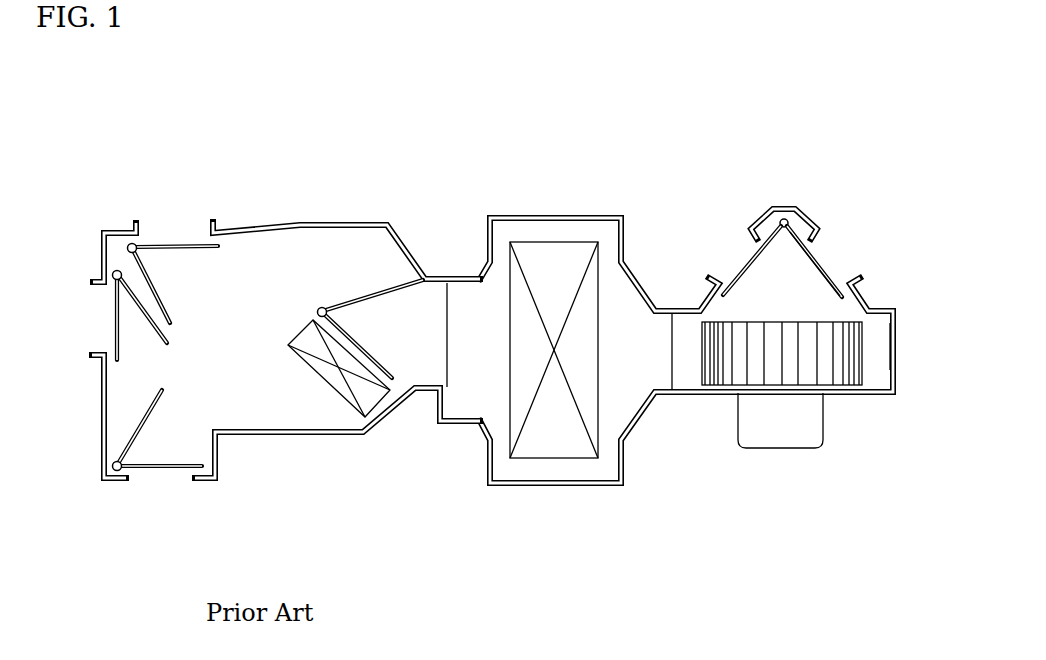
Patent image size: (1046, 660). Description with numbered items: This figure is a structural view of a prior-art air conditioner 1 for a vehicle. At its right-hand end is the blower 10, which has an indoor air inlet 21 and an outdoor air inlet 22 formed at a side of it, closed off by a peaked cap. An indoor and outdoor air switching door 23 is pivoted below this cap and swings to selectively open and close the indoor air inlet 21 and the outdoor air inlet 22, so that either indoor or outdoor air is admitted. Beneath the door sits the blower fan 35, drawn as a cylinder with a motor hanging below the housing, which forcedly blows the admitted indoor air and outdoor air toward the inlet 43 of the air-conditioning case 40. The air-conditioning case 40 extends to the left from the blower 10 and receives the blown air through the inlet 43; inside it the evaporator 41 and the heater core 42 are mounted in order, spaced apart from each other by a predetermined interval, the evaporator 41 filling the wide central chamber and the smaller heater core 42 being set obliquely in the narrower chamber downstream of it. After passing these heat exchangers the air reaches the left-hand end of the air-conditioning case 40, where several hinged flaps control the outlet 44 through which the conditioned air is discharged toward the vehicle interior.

The air conditioner 1 is at (580, 136).
The blower 10 is at (805, 202).
The indoor air inlet 21 is at (826, 252).
The outdoor air inlet 22 is at (737, 262).
The indoor and outdoor air switching door 23 is at (830, 273).
The blower fan 35 is at (778, 372).
The air-conditioning case 40 is at (336, 212).
The evaporator 41 is at (587, 373).
The heater core 42 is at (325, 372).
The inlet 43 is at (660, 328).
The outlet 44 is at (173, 232).